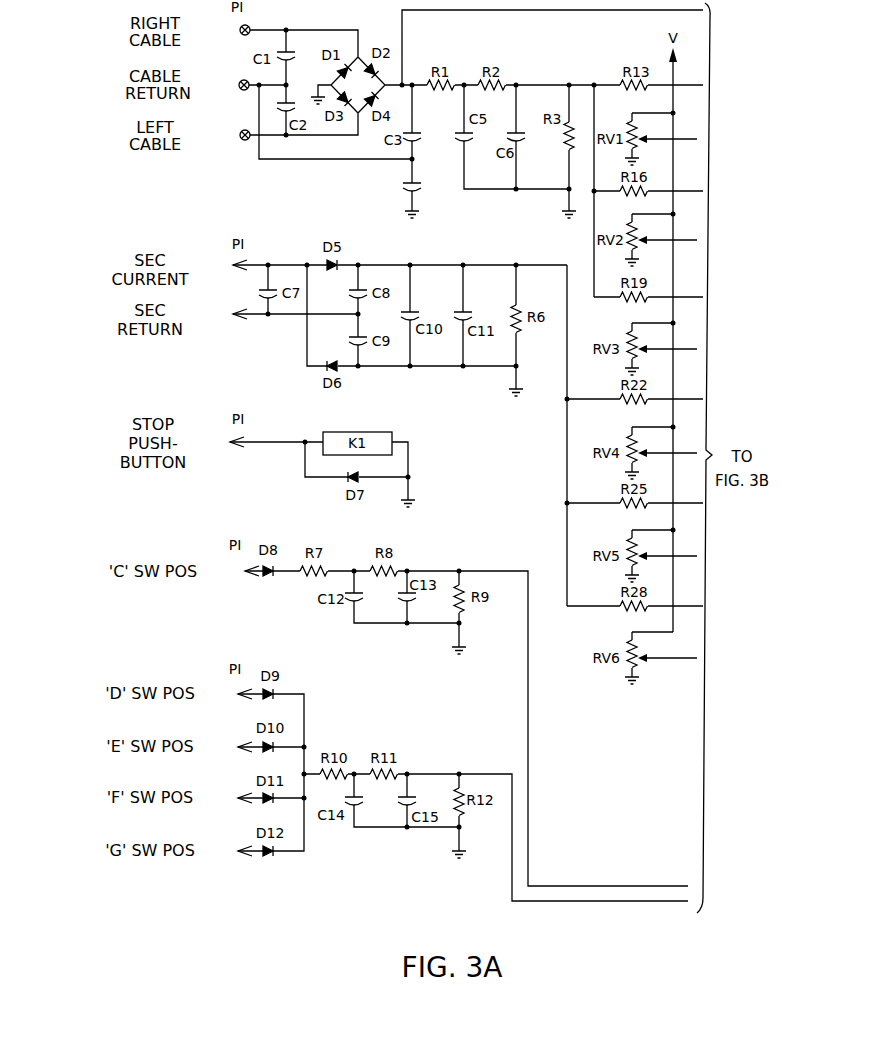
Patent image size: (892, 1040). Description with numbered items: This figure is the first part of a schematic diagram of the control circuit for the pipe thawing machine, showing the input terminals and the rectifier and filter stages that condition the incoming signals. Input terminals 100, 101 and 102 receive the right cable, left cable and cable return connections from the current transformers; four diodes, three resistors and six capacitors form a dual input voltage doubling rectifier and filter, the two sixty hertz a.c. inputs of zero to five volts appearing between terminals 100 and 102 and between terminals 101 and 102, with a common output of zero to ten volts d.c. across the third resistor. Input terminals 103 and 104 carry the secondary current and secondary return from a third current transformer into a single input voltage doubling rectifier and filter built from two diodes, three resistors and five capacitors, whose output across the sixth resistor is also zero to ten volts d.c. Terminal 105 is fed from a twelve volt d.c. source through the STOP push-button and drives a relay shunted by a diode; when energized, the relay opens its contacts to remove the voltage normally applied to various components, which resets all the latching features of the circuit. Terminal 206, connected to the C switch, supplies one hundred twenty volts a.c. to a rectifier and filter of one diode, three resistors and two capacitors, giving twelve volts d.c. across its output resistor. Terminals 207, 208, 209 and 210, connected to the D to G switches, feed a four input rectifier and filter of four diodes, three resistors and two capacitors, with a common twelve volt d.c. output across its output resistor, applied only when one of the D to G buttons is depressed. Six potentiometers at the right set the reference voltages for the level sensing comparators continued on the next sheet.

The input terminal 100 is at (225, 30).
The input terminal 101 is at (224, 135).
The input terminal 102 is at (224, 85).
The input terminal 103 is at (221, 257).
The input terminal 104 is at (221, 307).
The terminal 105 is at (219, 443).
The terminal 206 is at (233, 571).
The terminal 207 is at (229, 693).
The terminal 208 is at (229, 746).
The terminal 209 is at (229, 797).
The terminal 210 is at (229, 850).